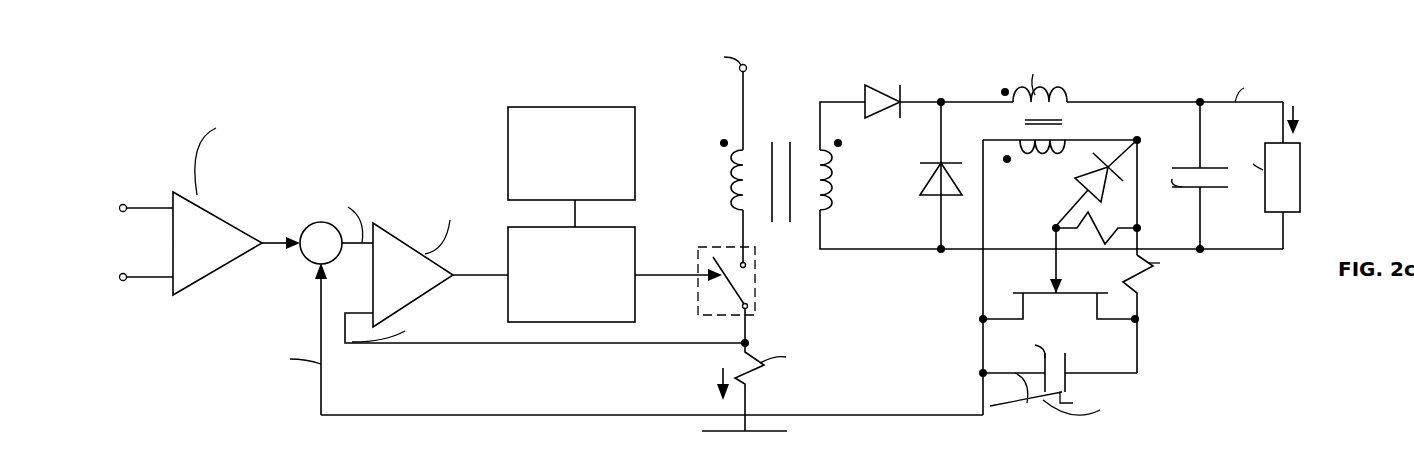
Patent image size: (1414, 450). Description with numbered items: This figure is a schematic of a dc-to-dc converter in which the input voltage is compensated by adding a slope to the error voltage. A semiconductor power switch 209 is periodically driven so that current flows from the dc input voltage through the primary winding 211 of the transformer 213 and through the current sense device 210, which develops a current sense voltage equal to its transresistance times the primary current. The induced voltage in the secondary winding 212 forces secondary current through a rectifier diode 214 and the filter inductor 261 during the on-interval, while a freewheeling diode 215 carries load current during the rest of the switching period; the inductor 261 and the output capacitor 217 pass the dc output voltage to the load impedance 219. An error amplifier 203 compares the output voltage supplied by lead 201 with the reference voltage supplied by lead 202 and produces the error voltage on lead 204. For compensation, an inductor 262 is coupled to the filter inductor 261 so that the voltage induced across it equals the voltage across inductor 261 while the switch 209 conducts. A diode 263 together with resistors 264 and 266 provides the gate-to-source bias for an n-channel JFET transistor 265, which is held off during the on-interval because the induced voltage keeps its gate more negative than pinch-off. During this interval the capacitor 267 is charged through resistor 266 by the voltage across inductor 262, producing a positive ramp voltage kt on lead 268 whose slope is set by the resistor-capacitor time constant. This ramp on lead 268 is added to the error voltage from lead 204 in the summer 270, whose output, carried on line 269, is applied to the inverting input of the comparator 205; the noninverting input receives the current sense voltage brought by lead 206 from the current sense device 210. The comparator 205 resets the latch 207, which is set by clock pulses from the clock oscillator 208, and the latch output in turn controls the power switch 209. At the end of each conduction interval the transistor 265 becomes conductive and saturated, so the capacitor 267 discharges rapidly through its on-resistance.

The lead 201 is at (170, 208).
The lead 202 is at (167, 280).
The error amplifier 203 is at (233, 262).
The lead 204 is at (264, 252).
The comparator circuit 205 is at (428, 295).
The lead 206 is at (450, 345).
The latch circuit 207 is at (635, 235).
The clock oscillator 208 is at (635, 108).
The semiconductor switch 209 is at (698, 305).
The current sense device 210 is at (756, 377).
The primary winding 211 is at (738, 201).
The secondary winding 212 is at (806, 200).
The transformer 213 is at (800, 113).
The rectifier diode 214 is at (886, 118).
The freewheeling diode 215 is at (946, 196).
The capacitor 217 is at (1181, 165).
The load impedance 219 is at (1280, 213).
The inductor 261 is at (1066, 97).
The inductor 262 is at (1032, 153).
The diode 263 is at (1070, 180).
The resistor 264 is at (1100, 236).
The JFET transistor 265 is at (1037, 290).
The resistor 266 is at (1146, 276).
The capacitor 267 is at (1063, 360).
The lead 268 is at (321, 389).
The summed signal line 269 is at (362, 243).
The summer 270 is at (308, 264).